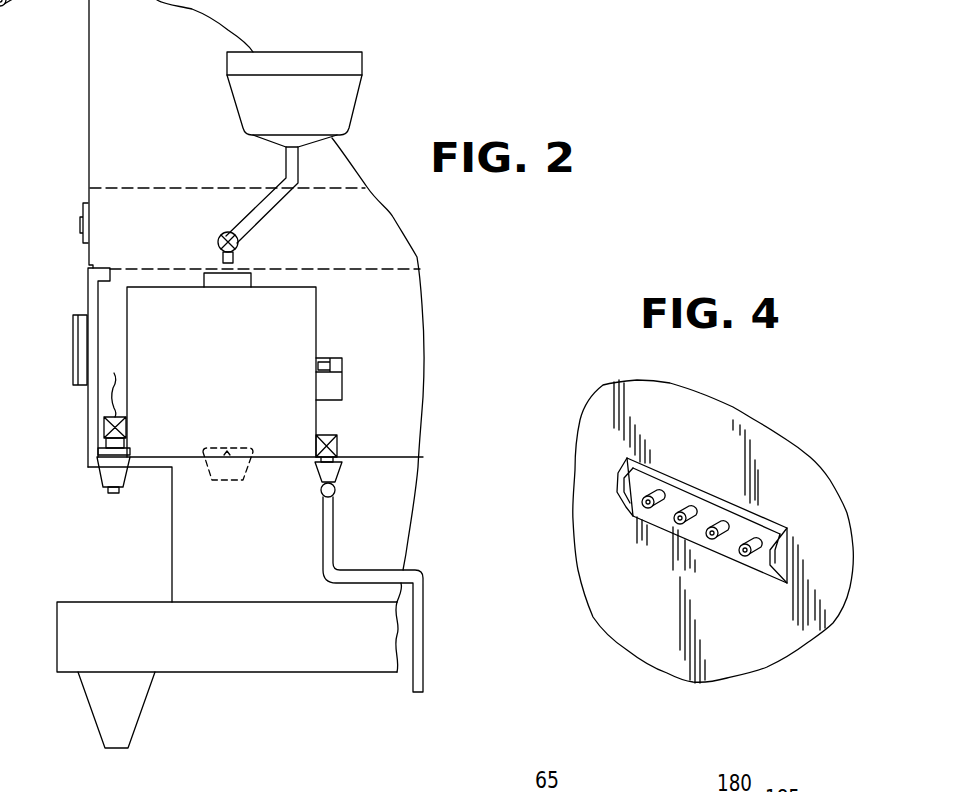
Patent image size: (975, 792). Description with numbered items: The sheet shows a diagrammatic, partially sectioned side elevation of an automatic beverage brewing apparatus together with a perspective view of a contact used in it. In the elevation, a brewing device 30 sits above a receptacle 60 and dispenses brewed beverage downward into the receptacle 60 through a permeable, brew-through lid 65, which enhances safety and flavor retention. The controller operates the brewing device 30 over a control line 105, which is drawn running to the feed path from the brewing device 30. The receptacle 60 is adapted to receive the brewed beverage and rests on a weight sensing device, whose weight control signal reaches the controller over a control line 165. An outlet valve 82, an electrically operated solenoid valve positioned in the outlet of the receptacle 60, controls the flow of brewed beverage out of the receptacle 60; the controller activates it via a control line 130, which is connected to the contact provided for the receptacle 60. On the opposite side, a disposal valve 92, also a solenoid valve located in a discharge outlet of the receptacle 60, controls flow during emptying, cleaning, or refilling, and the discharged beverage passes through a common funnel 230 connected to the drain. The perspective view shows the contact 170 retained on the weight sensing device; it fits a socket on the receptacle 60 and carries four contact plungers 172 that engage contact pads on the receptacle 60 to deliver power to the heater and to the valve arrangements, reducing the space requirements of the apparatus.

In FIG. 2, the brewing device 30 is at (337, 114).
In FIG. 2, the control line 105 is at (219, 234).
In FIG. 2, the permeable lid 65 is at (243, 282).
In FIG. 2, the receptacle 60 is at (305, 326).
In FIG. 2, the disposal valve 92 is at (340, 445).
In FIG. 2, the common funnel 230 is at (416, 572).
In FIG. 2, the control line 130 is at (114, 373).
In FIG. 2, the outlet valve 82 is at (103, 428).
In FIG. 2, the control line 165 is at (232, 481).
In FIG. 4, the contact 170 is at (695, 475).
In FIG. 4, the contact plunger 172 is at (740, 553).